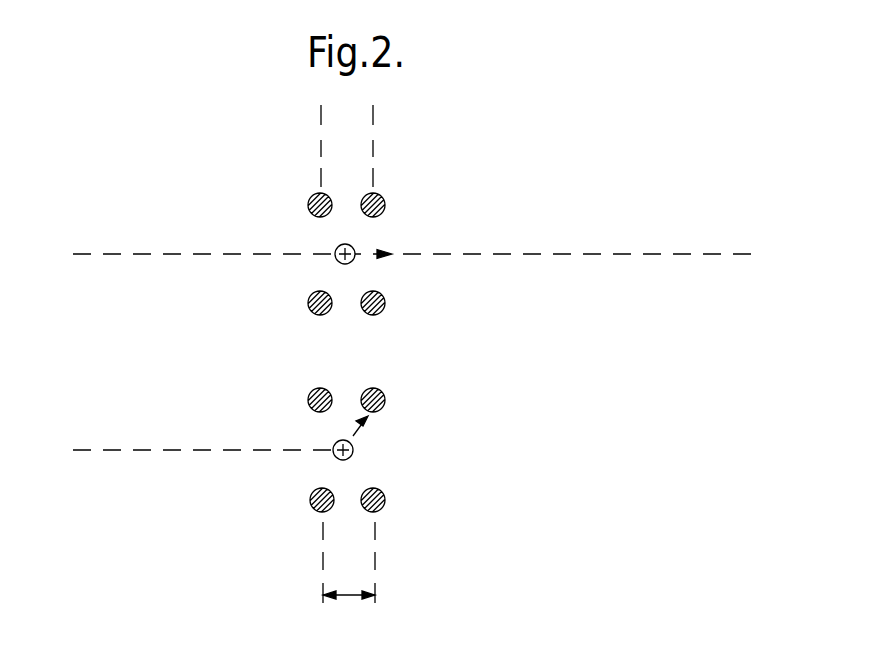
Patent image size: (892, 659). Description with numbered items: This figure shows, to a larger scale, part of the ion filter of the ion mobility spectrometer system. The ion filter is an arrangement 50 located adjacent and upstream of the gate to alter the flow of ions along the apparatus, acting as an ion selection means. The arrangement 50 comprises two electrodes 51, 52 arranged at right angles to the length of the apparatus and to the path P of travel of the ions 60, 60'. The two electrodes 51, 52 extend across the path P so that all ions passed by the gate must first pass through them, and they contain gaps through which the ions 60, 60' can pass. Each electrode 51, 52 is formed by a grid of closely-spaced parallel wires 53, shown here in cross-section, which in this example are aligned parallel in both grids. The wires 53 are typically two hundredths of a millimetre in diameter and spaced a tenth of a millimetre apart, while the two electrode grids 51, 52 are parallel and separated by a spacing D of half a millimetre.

The arrangement 50 is at (288, 463).
The electrode 51 is at (377, 532).
The electrode 52 is at (320, 533).
The wires 53 is at (308, 203).
The ions 60 is at (324, 265).
The ions 60' is at (383, 438).
The path P is at (562, 251).
The distance D is at (349, 584).